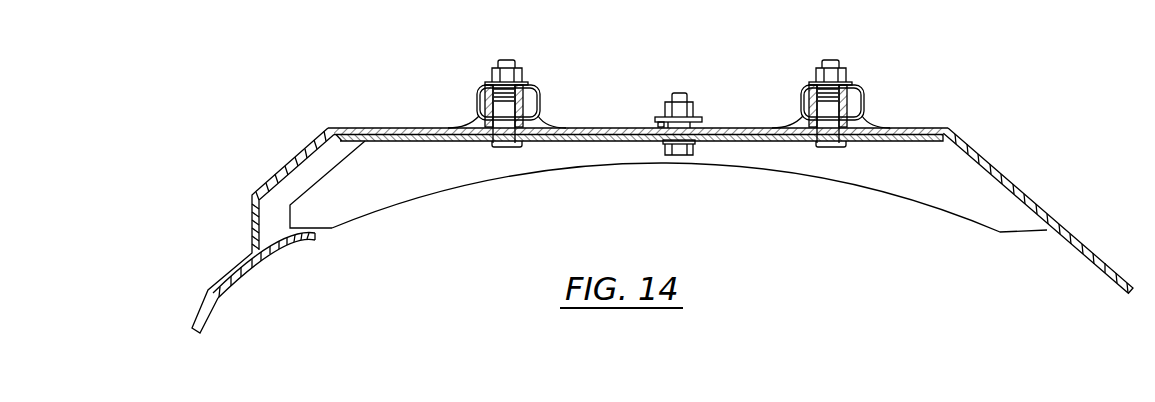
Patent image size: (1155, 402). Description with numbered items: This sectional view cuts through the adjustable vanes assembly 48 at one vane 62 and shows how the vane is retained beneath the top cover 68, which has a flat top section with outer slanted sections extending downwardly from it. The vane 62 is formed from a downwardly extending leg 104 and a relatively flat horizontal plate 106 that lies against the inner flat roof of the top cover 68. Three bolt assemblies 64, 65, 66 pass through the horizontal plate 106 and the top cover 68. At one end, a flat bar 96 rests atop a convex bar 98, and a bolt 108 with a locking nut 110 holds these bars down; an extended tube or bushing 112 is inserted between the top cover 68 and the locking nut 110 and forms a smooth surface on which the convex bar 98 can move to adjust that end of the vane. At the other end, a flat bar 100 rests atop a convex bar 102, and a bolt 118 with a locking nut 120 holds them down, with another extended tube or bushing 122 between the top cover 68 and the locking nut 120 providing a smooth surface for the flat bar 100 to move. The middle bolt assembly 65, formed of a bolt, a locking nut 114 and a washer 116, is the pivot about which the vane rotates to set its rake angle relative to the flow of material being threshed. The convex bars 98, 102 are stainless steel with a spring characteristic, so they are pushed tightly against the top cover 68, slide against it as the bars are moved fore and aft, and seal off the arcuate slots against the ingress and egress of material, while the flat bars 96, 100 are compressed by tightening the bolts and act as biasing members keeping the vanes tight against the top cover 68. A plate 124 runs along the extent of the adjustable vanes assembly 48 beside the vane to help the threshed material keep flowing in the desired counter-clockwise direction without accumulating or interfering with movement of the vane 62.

The adjustable vanes assembly 48 is at (1022, 80).
The vane 62 is at (782, 181).
The bolt assembly 64 is at (582, 117).
The bolt assembly 65 is at (686, 105).
The bolt assembly 66 is at (856, 117).
The top cover 68 is at (1010, 180).
The flat bar 96 is at (533, 88).
The convex bar 98 is at (550, 122).
The flat bar 100 is at (867, 93).
The convex bar 102 is at (873, 120).
The downwardly extending leg 104 is at (365, 195).
The horizontal plate 106 is at (410, 131).
The bolt 108 is at (510, 147).
The locking nut 110 is at (500, 72).
The extended tube or bushing 112 is at (490, 105).
The locking nut 114 is at (670, 107).
The washer 116 is at (707, 127).
The bolt 118 is at (829, 150).
The locking nut 120 is at (820, 74).
The extended tube or bushing 122 is at (818, 102).
The plate 124 is at (290, 243).